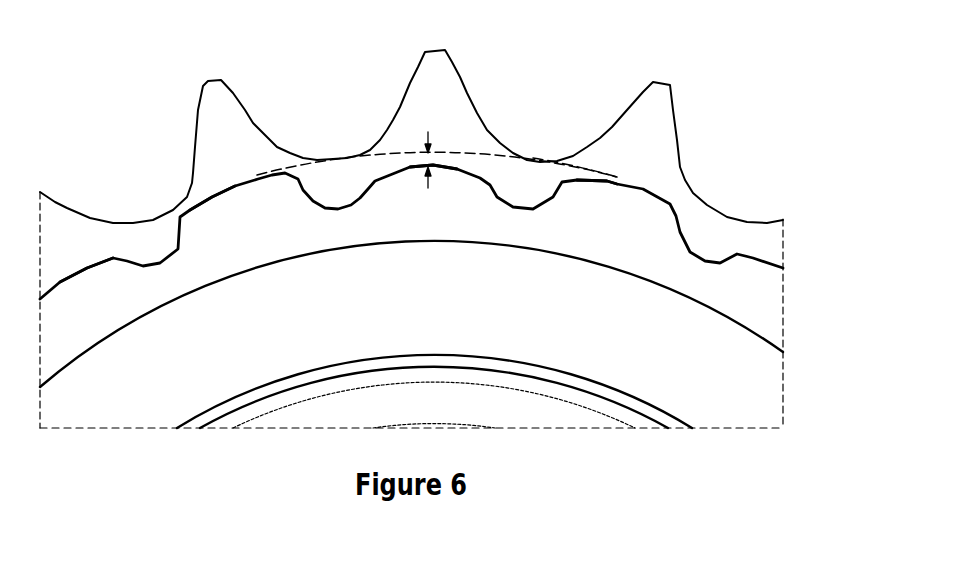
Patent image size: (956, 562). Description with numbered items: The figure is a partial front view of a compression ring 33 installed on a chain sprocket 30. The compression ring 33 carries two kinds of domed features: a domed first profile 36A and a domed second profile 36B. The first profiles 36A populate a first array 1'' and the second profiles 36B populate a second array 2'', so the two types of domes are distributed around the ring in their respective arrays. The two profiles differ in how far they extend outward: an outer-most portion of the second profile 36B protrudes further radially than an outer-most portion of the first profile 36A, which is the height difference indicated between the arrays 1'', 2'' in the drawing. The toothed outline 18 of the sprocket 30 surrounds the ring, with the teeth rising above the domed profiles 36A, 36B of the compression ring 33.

The sprocket teeth 18 is at (246, 110).
The chain sprocket 30 is at (707, 138).
The compression ring 33 is at (354, 203).
The domed first profile 36A is at (82, 263).
The domed second profile 36B is at (203, 192).
The first array 1'' is at (437, 122).
The second array 2'' is at (575, 115).